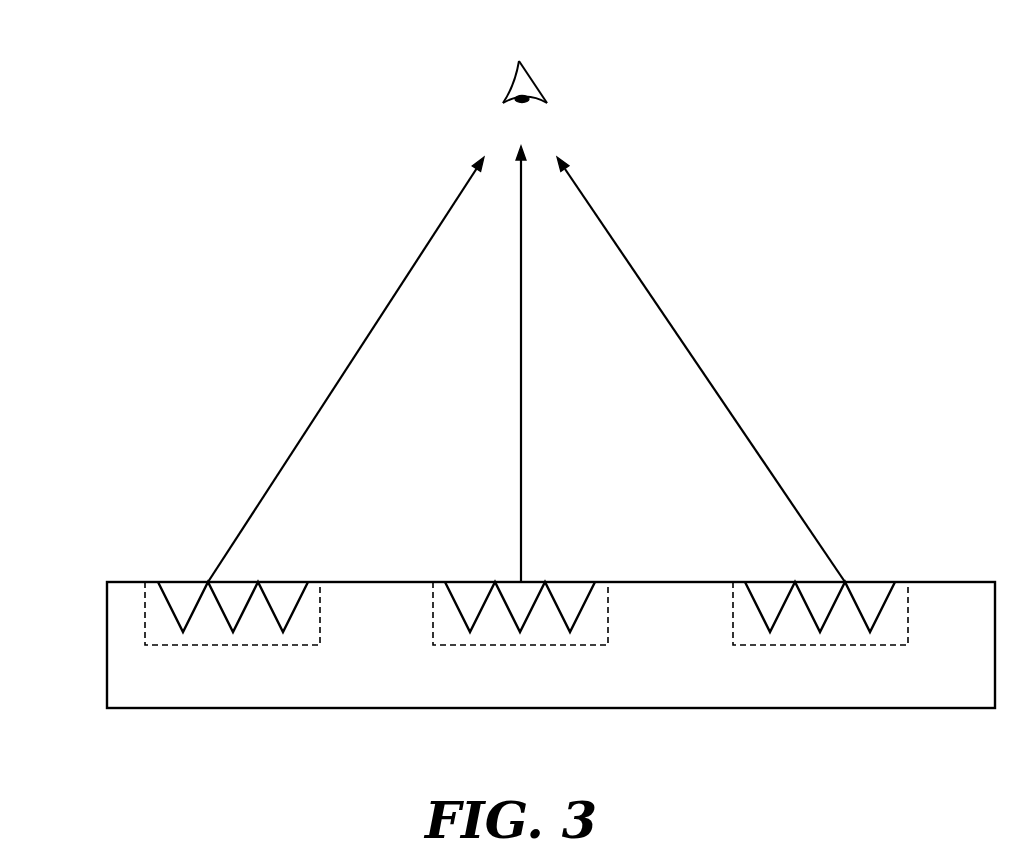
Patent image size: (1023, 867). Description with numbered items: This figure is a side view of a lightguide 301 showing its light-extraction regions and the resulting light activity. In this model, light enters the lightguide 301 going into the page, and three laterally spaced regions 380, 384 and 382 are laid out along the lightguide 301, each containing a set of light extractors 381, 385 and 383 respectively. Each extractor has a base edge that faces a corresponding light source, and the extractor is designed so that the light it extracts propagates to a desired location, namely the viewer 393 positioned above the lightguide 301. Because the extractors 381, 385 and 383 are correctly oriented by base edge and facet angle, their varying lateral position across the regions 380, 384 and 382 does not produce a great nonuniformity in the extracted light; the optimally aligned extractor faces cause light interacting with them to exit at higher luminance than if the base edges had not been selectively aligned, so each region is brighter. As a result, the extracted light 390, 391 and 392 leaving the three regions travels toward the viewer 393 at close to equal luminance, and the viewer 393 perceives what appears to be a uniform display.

The lightguide 301 is at (302, 668).
The region 380 is at (163, 632).
The extractor 381 is at (177, 592).
The region 382 is at (867, 592).
The extractor 383 is at (873, 598).
The region 384 is at (590, 633).
The extractor 385 is at (473, 595).
The light 390 is at (372, 323).
The light 391 is at (521, 358).
The light 392 is at (625, 250).
The viewer 393 is at (528, 82).